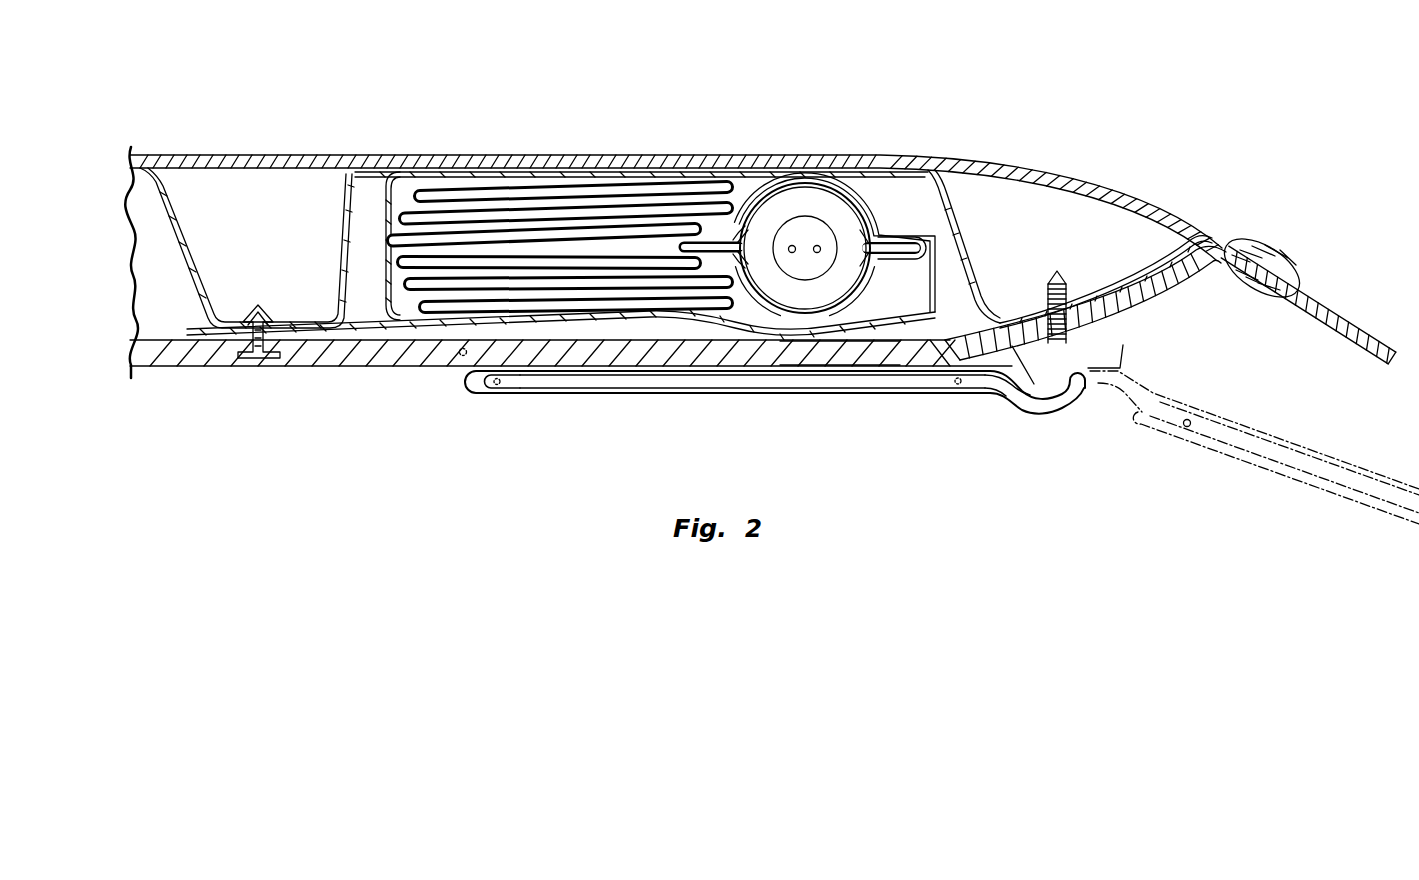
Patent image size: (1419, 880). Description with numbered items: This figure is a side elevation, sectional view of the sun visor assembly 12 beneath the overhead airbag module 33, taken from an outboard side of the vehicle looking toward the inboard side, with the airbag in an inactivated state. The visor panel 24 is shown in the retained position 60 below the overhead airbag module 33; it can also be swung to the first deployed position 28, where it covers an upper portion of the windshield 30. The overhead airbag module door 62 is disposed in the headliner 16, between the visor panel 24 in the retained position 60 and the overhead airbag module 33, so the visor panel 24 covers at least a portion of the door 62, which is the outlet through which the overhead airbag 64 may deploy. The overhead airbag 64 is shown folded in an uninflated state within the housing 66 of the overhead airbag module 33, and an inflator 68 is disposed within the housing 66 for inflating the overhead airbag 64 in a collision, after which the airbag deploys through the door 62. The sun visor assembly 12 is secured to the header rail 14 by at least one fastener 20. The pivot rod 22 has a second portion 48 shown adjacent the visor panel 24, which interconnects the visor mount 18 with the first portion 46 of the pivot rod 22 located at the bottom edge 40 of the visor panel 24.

The sun visor assembly 12 is at (963, 432).
The header rail 14 is at (1068, 212).
The headliner 16 is at (350, 369).
The visor mount 18 is at (1080, 392).
The fastener 20 is at (1065, 292).
The pivot rod 22 is at (518, 390).
The visor panel 24 is at (604, 394).
The first deployed position 28 is at (1335, 488).
The windshield 30 is at (1335, 312).
The overhead airbag module 33 is at (868, 196).
The bottom edge 40 is at (458, 380).
The first portion 46 is at (482, 387).
The second portion 48 is at (790, 393).
The retained position 60 is at (706, 394).
The overhead airbag module door 62 is at (835, 352).
The overhead airbag 64 is at (540, 200).
The housing 66 is at (385, 212).
The inflator 68 is at (800, 185).